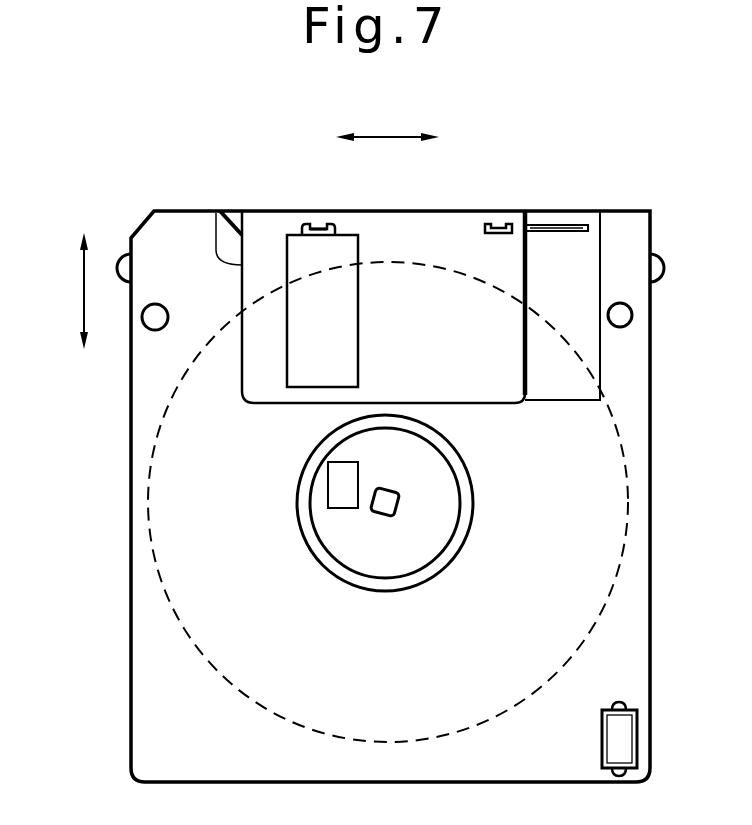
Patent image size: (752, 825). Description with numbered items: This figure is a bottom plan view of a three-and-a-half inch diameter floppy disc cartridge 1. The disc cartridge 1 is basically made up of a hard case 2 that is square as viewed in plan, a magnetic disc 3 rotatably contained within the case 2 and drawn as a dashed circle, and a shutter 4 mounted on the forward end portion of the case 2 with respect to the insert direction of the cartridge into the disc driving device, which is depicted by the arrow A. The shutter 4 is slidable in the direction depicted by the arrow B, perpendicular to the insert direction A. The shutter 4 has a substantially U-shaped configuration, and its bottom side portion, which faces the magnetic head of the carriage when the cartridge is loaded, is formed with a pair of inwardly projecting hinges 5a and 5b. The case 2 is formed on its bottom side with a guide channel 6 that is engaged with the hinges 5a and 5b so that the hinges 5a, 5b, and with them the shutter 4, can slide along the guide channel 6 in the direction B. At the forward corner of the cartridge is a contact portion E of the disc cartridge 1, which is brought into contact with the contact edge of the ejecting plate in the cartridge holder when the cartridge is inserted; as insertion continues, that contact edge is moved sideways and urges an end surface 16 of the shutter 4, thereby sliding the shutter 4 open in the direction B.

The disc cartridge 1 is at (652, 360).
The hard case 2 is at (620, 240).
The magnetic disc 3 is at (622, 458).
The shutter 4 is at (410, 242).
The hinge 5a is at (318, 224).
The hinge 5b is at (498, 222).
The guide channel 6 is at (550, 226).
The end surface 16 is at (218, 211).
The contact portion E is at (240, 218).
The insert direction A is at (84, 290).
The shutter sliding direction B is at (390, 136).